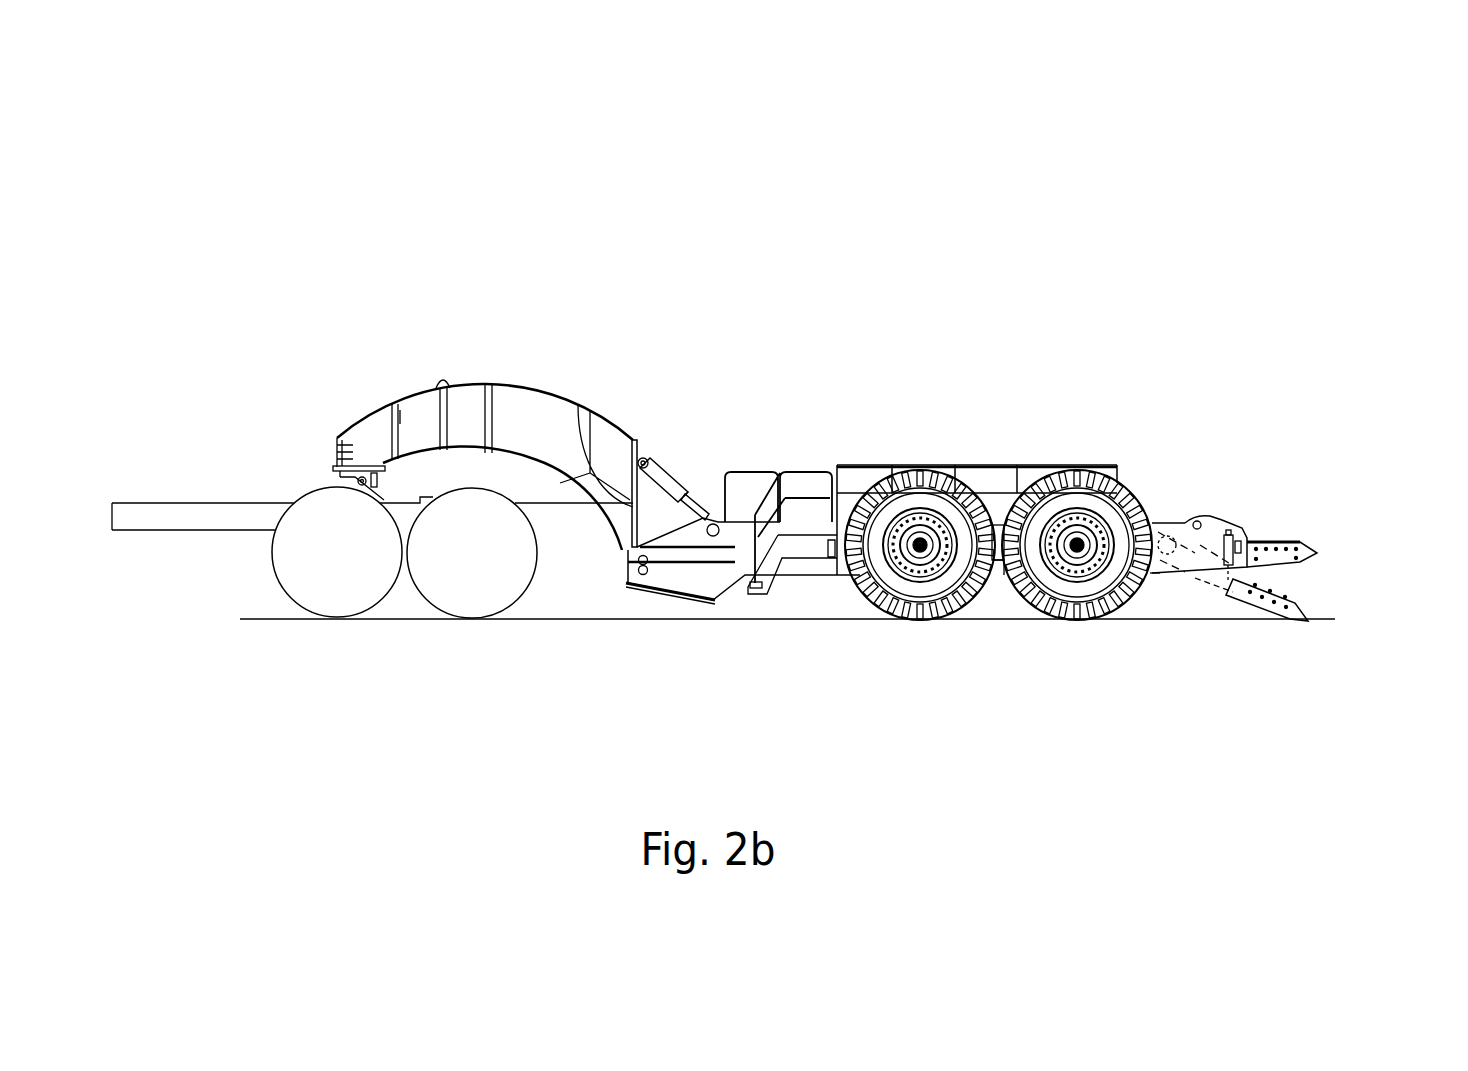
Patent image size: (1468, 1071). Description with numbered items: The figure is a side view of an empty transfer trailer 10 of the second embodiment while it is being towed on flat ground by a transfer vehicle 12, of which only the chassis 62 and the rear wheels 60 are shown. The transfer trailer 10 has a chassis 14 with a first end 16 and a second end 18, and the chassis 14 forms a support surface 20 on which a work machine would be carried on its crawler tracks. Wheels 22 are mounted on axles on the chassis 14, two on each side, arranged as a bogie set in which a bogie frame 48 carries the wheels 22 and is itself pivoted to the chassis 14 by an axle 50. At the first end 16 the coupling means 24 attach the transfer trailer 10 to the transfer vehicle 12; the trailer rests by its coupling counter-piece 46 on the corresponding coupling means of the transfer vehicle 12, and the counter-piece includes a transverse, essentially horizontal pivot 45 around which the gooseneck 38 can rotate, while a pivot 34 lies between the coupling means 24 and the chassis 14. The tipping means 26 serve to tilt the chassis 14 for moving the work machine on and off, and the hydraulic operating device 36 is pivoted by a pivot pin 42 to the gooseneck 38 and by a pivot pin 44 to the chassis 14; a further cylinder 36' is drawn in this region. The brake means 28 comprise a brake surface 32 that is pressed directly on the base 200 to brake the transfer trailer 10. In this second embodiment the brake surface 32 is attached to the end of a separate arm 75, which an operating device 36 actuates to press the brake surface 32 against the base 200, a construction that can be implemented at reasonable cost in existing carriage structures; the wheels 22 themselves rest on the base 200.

The transfer trailer 10 is at (858, 340).
The transfer vehicle 12 is at (385, 632).
The chassis 14 is at (1170, 512).
The first end 16 is at (692, 657).
The second end 18 is at (1299, 534).
The support surface 20 is at (1260, 521).
The wheels 22 is at (1067, 622).
The coupling means 24 is at (485, 391).
The tipping means 26 is at (713, 437).
The brake means 28 is at (704, 610).
The brake surface 32 is at (668, 592).
The pivot 34 is at (627, 567).
The operating device 36 is at (1253, 492).
The cylinder rod pin 36' is at (697, 401).
The gooseneck 38 is at (523, 415).
The pivot pin 42 is at (645, 458).
The pivot pin 44 is at (713, 524).
The pivot 45 is at (368, 476).
The coupling counter-piece 46 is at (326, 470).
The bogie frame 48 is at (1003, 582).
The axle 50 is at (997, 540).
The rear wheels 60 is at (320, 571).
The chassis 62 is at (215, 520).
The arm 75 is at (1226, 568).
The base 200 is at (1072, 719).